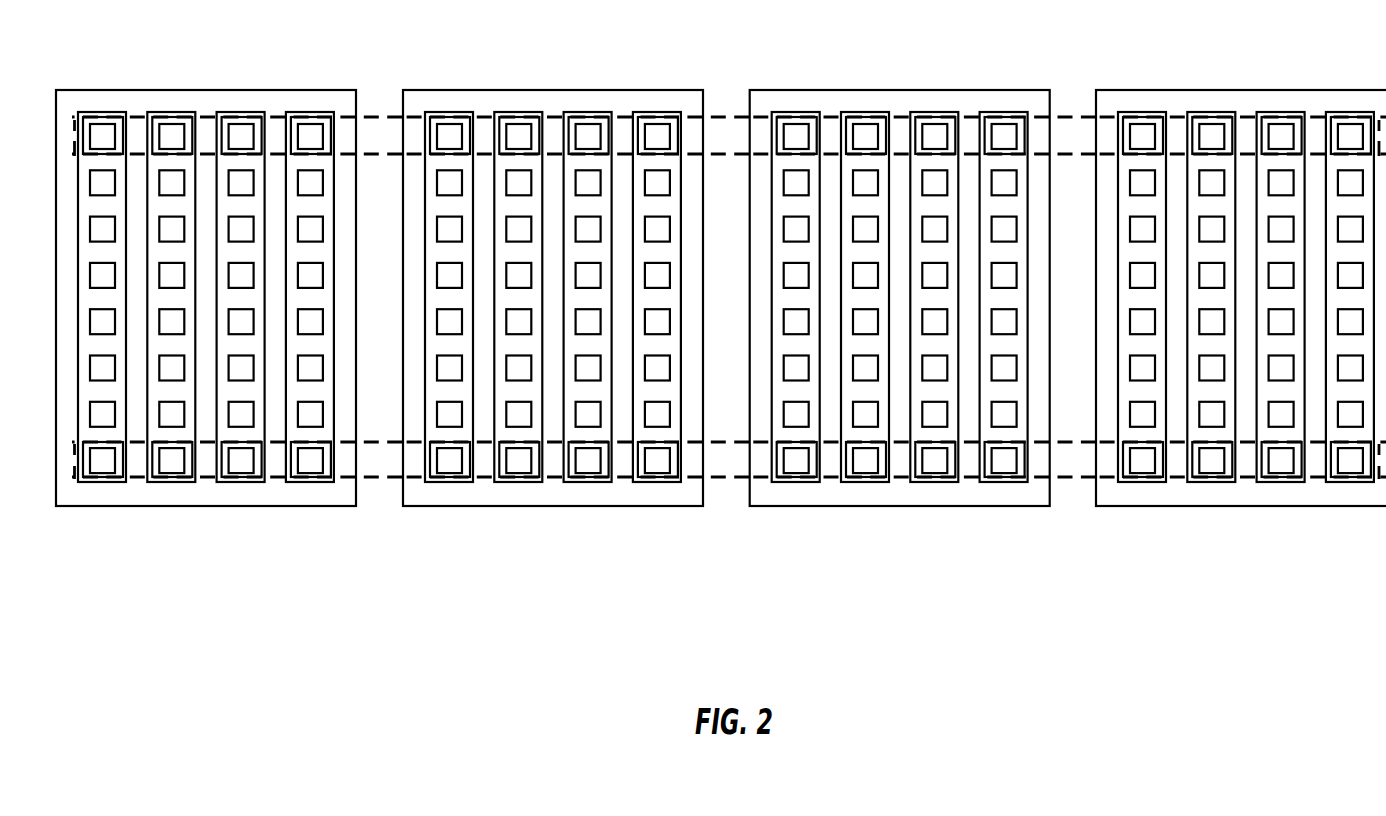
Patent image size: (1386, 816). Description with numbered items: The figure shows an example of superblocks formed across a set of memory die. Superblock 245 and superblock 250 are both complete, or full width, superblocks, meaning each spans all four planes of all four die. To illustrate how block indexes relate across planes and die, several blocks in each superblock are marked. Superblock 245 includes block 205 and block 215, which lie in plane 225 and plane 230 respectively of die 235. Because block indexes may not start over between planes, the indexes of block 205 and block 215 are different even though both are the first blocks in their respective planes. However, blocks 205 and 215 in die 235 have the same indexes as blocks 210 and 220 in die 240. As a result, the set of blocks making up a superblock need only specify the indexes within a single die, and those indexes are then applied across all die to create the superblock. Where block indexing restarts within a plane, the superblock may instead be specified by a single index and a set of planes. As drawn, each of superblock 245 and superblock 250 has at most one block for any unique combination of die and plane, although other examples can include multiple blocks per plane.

The block 205 is at (103, 120).
The block 215 is at (173, 122).
The block 210 is at (447, 122).
The block 220 is at (518, 122).
The plane 225 is at (133, 297).
The plane 230 is at (202, 297).
The die 235 is at (260, 507).
The die 240 is at (553, 507).
The superblock 245 is at (382, 120).
The superblock 250 is at (383, 477).